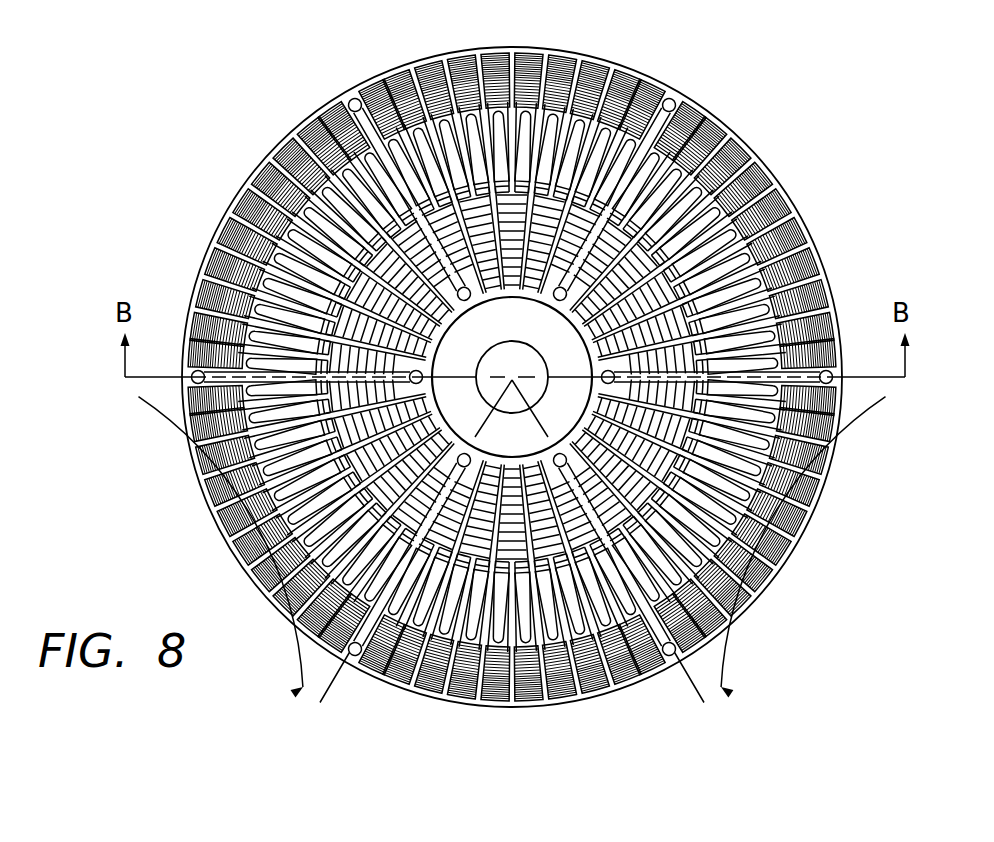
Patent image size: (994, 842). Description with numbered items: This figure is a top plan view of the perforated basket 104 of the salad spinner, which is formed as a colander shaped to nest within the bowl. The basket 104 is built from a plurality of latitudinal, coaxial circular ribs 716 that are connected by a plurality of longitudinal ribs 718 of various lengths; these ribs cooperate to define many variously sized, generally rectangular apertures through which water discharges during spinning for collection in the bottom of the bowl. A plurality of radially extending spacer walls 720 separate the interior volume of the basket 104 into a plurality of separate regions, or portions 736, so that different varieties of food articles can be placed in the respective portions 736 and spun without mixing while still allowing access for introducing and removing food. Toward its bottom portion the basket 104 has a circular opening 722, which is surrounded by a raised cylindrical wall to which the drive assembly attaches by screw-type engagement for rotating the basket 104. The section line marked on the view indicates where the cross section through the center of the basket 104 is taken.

The basket 104 is at (762, 162).
The circular ribs 716 is at (552, 212).
The longitudinal ribs 718 is at (255, 227).
The spacer walls 720 is at (349, 100).
The circular opening 722 is at (512, 398).
The portions 736 is at (512, 547).